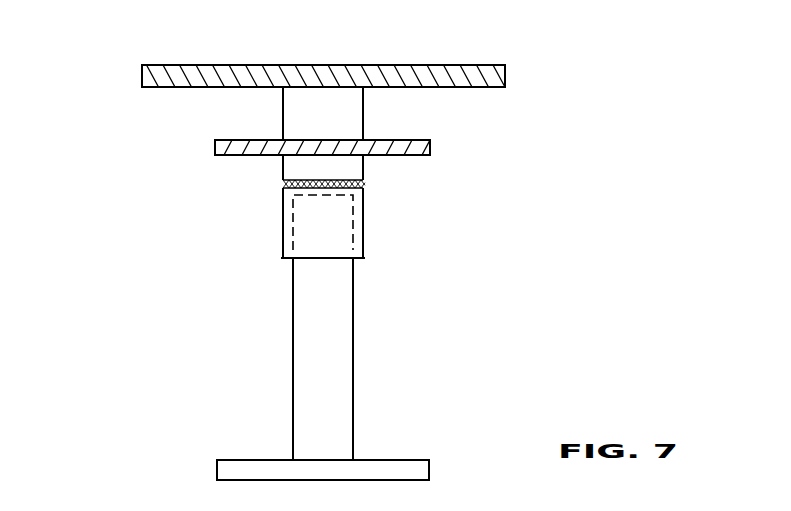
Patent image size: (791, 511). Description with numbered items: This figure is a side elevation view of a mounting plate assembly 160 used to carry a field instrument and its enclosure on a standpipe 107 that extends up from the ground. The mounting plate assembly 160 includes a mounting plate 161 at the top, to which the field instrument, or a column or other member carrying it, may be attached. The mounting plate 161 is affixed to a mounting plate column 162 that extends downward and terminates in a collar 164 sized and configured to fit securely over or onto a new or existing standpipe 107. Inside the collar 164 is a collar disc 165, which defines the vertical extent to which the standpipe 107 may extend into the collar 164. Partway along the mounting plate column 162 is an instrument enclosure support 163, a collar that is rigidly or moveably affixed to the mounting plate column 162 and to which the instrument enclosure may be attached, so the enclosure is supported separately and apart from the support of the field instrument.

The standpipe 107 is at (353, 339).
The mounting plate assembly 160 is at (108, 223).
The mounting plate 161 is at (470, 87).
The mounting plate column 162 is at (283, 112).
The instrument enclosure support 163 is at (388, 155).
The collar 164 is at (290, 246).
The collar disc 165 is at (283, 184).